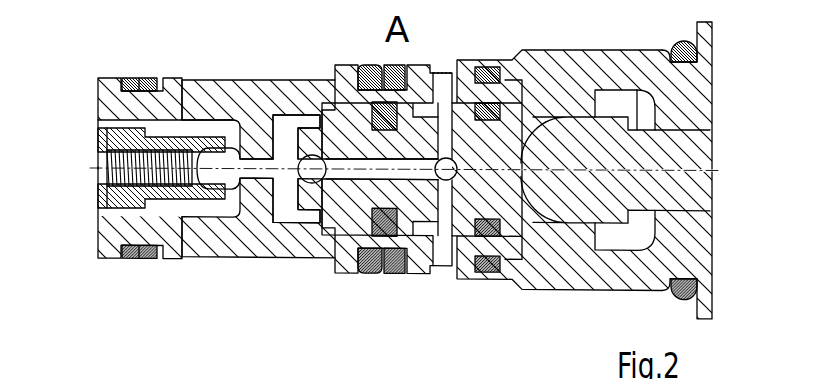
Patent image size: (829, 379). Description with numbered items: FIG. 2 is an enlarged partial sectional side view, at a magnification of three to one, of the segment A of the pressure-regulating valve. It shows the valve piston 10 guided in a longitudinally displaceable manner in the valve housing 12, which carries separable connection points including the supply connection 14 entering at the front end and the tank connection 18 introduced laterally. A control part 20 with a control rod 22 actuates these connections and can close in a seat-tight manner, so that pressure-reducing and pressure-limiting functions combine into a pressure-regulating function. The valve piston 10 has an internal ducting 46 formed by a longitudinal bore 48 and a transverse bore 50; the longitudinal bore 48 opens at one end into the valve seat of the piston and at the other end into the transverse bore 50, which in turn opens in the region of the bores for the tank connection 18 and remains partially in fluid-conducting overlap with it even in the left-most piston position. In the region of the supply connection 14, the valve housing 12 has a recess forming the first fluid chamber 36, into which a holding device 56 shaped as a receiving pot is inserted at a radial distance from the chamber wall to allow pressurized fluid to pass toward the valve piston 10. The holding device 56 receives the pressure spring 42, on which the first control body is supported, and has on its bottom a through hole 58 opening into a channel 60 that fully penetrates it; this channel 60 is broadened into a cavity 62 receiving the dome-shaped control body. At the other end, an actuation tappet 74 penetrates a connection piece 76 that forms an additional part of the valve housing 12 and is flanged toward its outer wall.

The valve piston 10 is at (325, 203).
The valve housing 12 is at (237, 227).
The supply connection 14 is at (100, 213).
The tank connection 18 is at (447, 72).
The control part 20 is at (207, 177).
The control rod 22 is at (321, 375).
The first fluid chamber 36 is at (167, 127).
The pressure spring 42 is at (100, 160).
The internal ducting 46 is at (317, 160).
The longitudinal bore 48 is at (385, 170).
The transverse bore 50 is at (434, 197).
The holding device 56 is at (100, 192).
The through hole 58 is at (98, 153).
The channel 60 is at (182, 143).
The cavity 62 is at (636, 130).
The actuation tappet 74 is at (677, 193).
The connection piece 76 is at (675, 103).